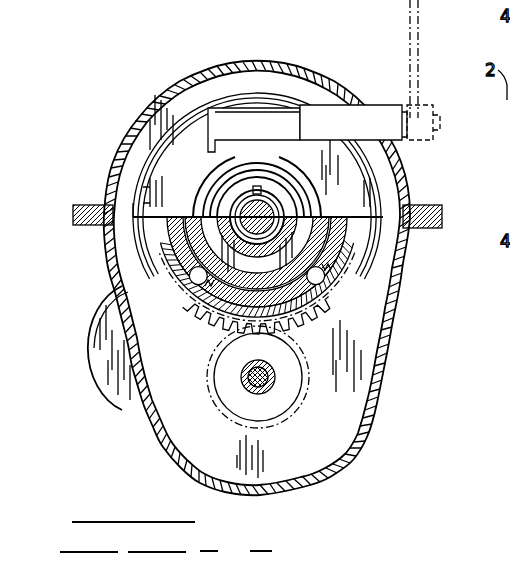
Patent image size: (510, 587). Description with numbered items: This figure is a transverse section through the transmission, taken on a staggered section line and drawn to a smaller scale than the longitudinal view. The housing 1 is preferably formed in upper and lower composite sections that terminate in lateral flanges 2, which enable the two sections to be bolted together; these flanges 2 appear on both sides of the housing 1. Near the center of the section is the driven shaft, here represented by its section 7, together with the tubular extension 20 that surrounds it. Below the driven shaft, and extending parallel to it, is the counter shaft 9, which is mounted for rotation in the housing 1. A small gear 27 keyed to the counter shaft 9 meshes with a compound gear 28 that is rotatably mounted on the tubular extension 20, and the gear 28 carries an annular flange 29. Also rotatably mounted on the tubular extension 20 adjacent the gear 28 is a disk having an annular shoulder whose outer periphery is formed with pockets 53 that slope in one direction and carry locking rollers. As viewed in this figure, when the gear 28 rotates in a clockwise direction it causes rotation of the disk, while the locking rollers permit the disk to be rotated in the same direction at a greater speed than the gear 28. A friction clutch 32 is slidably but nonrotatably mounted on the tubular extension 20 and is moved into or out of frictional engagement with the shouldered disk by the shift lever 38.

The housing 1 is at (312, 70).
The lateral flanges 2 is at (92, 228).
The section of the driven shaft 7 is at (272, 204).
The counter shaft 9 is at (238, 398).
The tubular extension 20 is at (238, 183).
The small gear 27 is at (240, 379).
The compound gear 28 is at (208, 332).
The annular flange 29 is at (195, 298).
The friction clutch 32 is at (257, 200).
The shift lever 38 is at (222, 118).
The pockets 53 is at (188, 273).